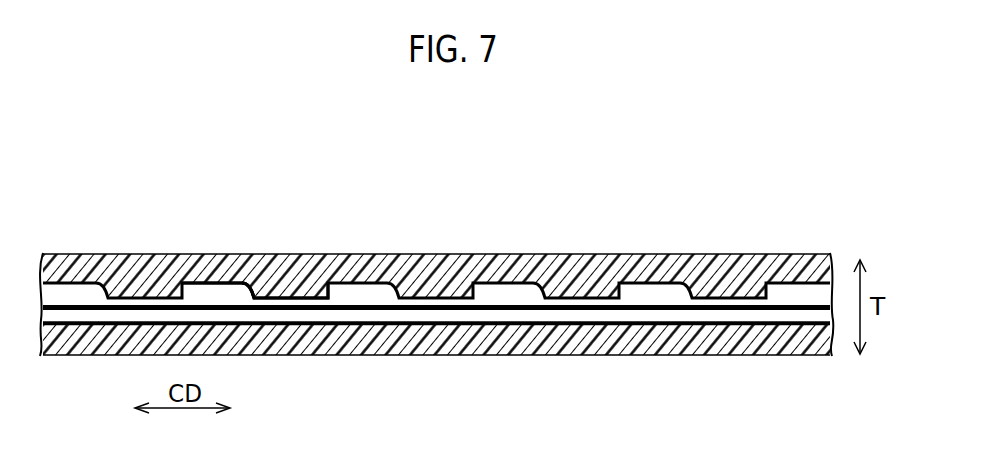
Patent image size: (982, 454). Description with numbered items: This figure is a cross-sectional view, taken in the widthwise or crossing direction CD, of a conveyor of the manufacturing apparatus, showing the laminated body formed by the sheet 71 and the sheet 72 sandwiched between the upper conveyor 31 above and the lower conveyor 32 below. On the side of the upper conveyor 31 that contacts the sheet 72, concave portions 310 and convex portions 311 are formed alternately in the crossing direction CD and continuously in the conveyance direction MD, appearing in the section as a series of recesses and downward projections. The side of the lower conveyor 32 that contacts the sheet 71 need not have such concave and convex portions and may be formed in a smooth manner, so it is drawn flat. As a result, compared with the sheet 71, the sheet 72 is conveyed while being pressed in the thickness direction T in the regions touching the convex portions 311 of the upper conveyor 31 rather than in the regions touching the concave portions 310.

The upper conveyor 31 is at (435, 266).
The concave portions 310 is at (252, 289).
The convex portions 311 is at (318, 289).
The lower conveyor 32 is at (435, 343).
The sheet 71 is at (660, 317).
The sheet 72 is at (655, 287).